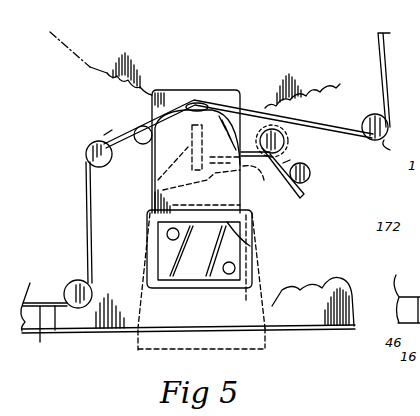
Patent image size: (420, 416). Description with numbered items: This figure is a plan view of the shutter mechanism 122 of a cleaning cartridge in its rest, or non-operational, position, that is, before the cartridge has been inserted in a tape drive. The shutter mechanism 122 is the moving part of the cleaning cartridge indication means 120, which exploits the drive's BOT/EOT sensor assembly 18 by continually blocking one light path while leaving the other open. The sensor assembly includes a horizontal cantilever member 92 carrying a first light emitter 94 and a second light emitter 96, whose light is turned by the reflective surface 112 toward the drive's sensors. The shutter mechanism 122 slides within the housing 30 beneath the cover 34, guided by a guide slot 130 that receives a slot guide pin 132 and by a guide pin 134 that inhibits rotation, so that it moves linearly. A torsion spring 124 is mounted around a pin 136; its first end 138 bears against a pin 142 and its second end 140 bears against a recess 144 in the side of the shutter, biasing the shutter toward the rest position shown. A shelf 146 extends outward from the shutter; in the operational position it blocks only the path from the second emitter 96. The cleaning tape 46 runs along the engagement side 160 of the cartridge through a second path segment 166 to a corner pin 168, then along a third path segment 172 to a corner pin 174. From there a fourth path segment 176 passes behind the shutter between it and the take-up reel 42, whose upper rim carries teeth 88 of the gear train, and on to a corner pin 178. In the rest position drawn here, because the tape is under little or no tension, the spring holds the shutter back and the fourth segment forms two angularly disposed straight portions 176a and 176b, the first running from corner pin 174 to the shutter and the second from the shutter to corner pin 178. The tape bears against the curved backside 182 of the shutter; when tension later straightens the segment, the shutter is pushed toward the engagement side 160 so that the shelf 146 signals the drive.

The BOT/EOT sensor assembly 18 is at (133, 353).
The housing 30 is at (335, 333).
The cover 34 is at (316, 311).
The take-up reel 42 is at (87, 70).
The cleaning tape 46 is at (40, 338).
The teeth 88 is at (125, 90).
The horizontal cantilever member 92 is at (136, 342).
The first light emitter 94 is at (235, 270).
The second light emitter 96 is at (168, 233).
The reflective surface 112 is at (147, 268).
The cleaning cartridge indication means 120 is at (272, 212).
The shutter mechanism 122 is at (238, 83).
The torsion spring 124 is at (290, 162).
The guide slot 130 is at (163, 176).
The slot guide pin 132 is at (150, 190).
The guide pin 134 is at (146, 145).
The pin 136 is at (284, 141).
The spring end 138 is at (304, 197).
The spring end 140 is at (252, 186).
The pin 142 is at (312, 176).
The recess 144 is at (148, 212).
The shelf 146 is at (250, 246).
The engagement side 160 is at (295, 333).
The second path segment 166 is at (55, 320).
The corner pin 168 is at (65, 276).
The third path segment 172 is at (85, 225).
The corner pin 174 is at (87, 158).
The fourth path segment 176 is at (188, 97).
The path portion 176a is at (103, 133).
The path portion 176b is at (333, 124).
The corner pin 178 is at (402, 74).
The backside 182 is at (199, 104).